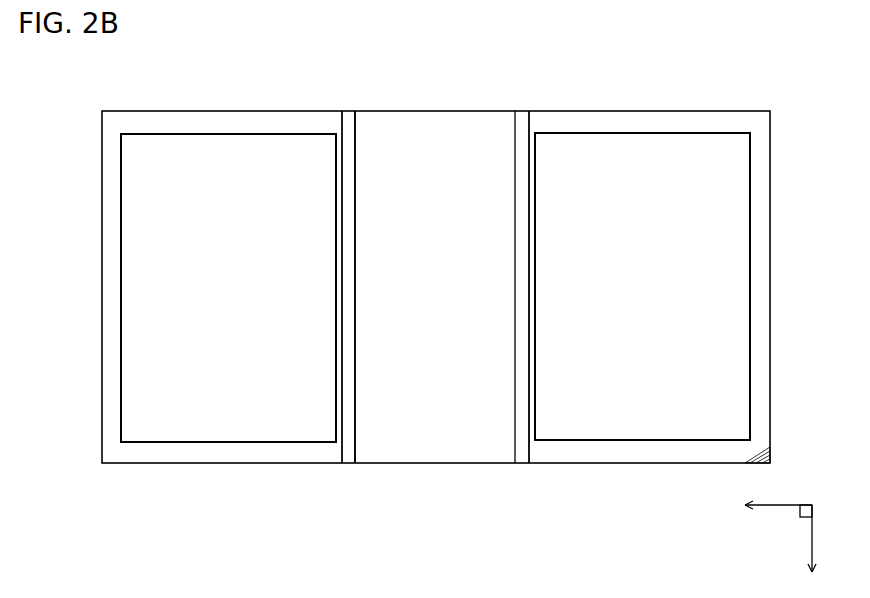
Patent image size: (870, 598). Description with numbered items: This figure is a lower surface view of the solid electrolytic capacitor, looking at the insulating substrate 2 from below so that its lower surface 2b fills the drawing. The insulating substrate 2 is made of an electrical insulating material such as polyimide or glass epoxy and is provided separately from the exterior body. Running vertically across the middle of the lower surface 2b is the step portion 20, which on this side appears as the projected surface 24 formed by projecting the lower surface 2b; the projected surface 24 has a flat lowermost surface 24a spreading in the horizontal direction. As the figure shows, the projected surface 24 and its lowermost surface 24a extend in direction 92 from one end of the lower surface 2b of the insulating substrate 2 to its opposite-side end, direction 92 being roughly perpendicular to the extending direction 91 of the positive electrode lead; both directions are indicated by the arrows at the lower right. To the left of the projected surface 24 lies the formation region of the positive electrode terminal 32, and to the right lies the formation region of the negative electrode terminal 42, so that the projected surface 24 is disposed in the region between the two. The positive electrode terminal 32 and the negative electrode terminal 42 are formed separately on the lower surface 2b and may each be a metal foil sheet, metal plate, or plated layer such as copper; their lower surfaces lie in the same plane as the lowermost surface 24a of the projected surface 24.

The insulating substrate 2 is at (759, 128).
The lower surface 2b is at (757, 453).
The step portion 20 is at (434, 125).
The projected surface 24 is at (355, 132).
The lowermost surface 24a is at (410, 182).
The positive electrode terminal 32 is at (230, 158).
The negative electrode terminal 42 is at (592, 158).
The extending direction 91 is at (776, 520).
The direction 92 is at (827, 549).